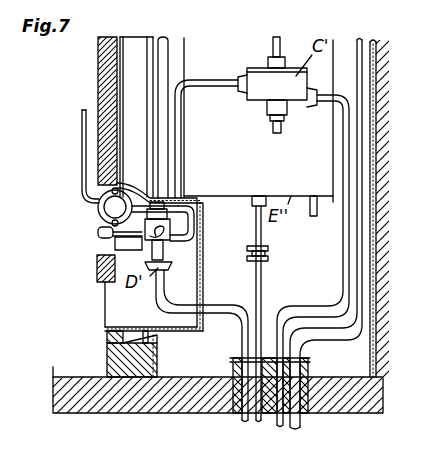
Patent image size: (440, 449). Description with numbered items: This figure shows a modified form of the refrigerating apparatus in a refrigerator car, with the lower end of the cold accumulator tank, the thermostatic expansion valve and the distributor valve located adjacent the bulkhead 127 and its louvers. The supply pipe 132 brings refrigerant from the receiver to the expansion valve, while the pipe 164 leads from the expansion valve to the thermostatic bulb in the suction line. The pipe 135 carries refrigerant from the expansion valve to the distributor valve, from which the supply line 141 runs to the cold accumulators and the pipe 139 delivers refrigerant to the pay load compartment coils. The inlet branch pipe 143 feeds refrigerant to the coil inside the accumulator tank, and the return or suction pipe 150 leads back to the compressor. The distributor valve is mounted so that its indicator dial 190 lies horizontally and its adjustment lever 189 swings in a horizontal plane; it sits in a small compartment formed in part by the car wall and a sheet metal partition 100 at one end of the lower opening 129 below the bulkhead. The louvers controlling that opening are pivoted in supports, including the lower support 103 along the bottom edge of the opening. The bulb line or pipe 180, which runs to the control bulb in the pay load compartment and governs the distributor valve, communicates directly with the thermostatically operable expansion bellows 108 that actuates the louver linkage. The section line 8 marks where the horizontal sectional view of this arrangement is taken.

The bulkhead 127 is at (99, 62).
The pipe for delivering refrigerant to pay load compartment coils 139 is at (164, 38).
The pipe leading to thermostatic bulb 164 is at (281, 38).
The return or suction pipe 150 is at (374, 41).
The pipe from expansion valve to distributor valve 135 is at (216, 80).
The supply pipe 132 is at (357, 244).
The inlet branch pipe 143 is at (265, 242).
The sheet metal partition 100 is at (203, 276).
The supply line to cold accumulators 141 is at (212, 322).
The lower support 103 is at (106, 334).
The bulb line or pipe 180 is at (82, 112).
The section line 8 is at (98, 190).
The thermostatically operable expansion bellows 108 is at (97, 208).
The adjustment lever 189 is at (98, 232).
The indicator dial 190 is at (105, 244).
The lower opening 129 is at (96, 276).